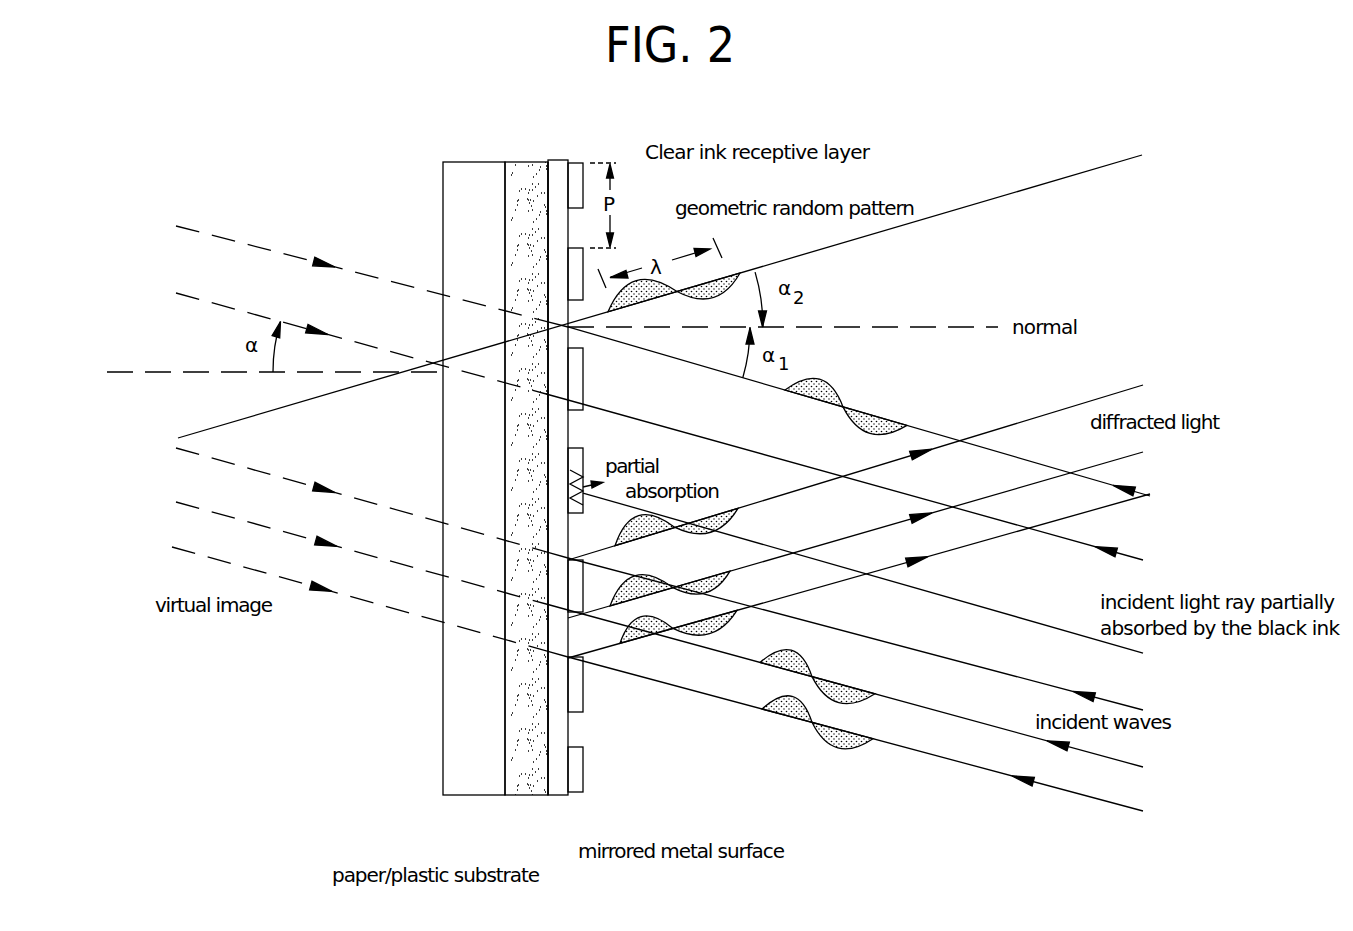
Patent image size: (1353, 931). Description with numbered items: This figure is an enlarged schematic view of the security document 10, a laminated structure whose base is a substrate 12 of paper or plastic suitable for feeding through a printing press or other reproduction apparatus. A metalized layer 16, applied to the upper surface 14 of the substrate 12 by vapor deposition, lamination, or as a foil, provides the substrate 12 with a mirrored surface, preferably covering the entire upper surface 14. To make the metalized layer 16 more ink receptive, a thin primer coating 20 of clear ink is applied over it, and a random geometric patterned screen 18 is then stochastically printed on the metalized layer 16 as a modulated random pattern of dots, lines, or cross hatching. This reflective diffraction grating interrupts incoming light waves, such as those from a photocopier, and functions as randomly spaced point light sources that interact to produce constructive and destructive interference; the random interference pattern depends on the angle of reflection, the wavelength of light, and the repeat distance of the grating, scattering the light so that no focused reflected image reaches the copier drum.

The security document 10 is at (382, 180).
The substrate 12 is at (468, 790).
The upper surface 14 is at (508, 190).
The metalized layer 16 is at (530, 790).
The random geometric patterned screen 18 is at (587, 268).
The primer coating 20 is at (562, 162).